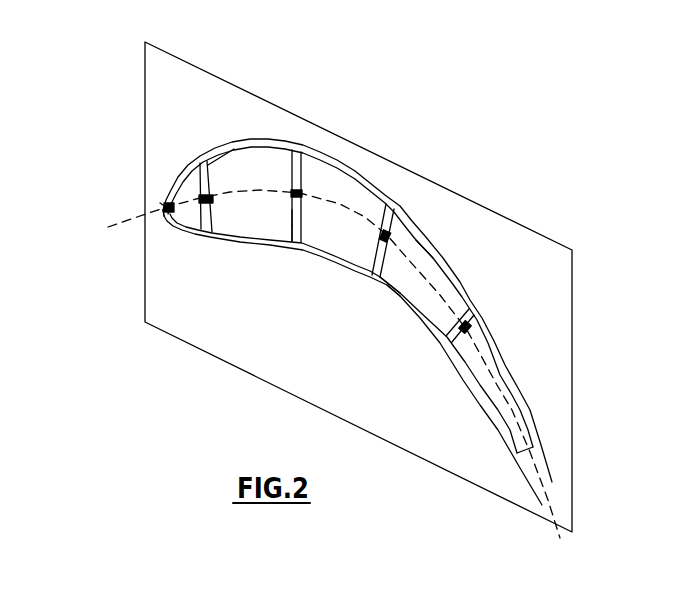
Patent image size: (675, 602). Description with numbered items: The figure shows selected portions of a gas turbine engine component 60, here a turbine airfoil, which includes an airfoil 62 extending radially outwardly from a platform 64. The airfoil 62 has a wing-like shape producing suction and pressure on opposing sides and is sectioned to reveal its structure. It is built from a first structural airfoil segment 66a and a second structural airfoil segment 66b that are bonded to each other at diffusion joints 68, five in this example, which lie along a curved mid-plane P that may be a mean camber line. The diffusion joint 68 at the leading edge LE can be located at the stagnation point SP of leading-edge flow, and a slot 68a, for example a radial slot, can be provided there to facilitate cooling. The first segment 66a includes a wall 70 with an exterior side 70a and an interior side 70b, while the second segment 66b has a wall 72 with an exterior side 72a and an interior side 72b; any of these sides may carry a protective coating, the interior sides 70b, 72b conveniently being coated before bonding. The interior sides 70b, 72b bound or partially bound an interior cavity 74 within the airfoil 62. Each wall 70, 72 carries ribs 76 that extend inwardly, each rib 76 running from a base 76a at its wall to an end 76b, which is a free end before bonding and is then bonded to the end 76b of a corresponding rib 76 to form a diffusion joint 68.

The component 60 is at (194, 253).
The airfoil 62 is at (228, 136).
The platform 64 is at (498, 215).
The first structural airfoil segment 66a is at (339, 163).
The second structural airfoil segment 66b is at (313, 250).
The diffusion joint 68 is at (199, 197).
The slot 68a is at (166, 221).
The wall 70 is at (457, 283).
The exterior side 70a is at (432, 247).
The interior side 70b is at (437, 262).
The wall 72 is at (416, 303).
The exterior side 72a is at (390, 283).
The interior side 72b is at (388, 276).
The interior cavity 74 is at (265, 163).
The rib 76 is at (303, 160).
The base 76a is at (283, 228).
The end 76b is at (290, 218).
The stagnation point SP is at (156, 198).
The curved mid-plane P is at (125, 220).
The leading edge LE is at (163, 240).